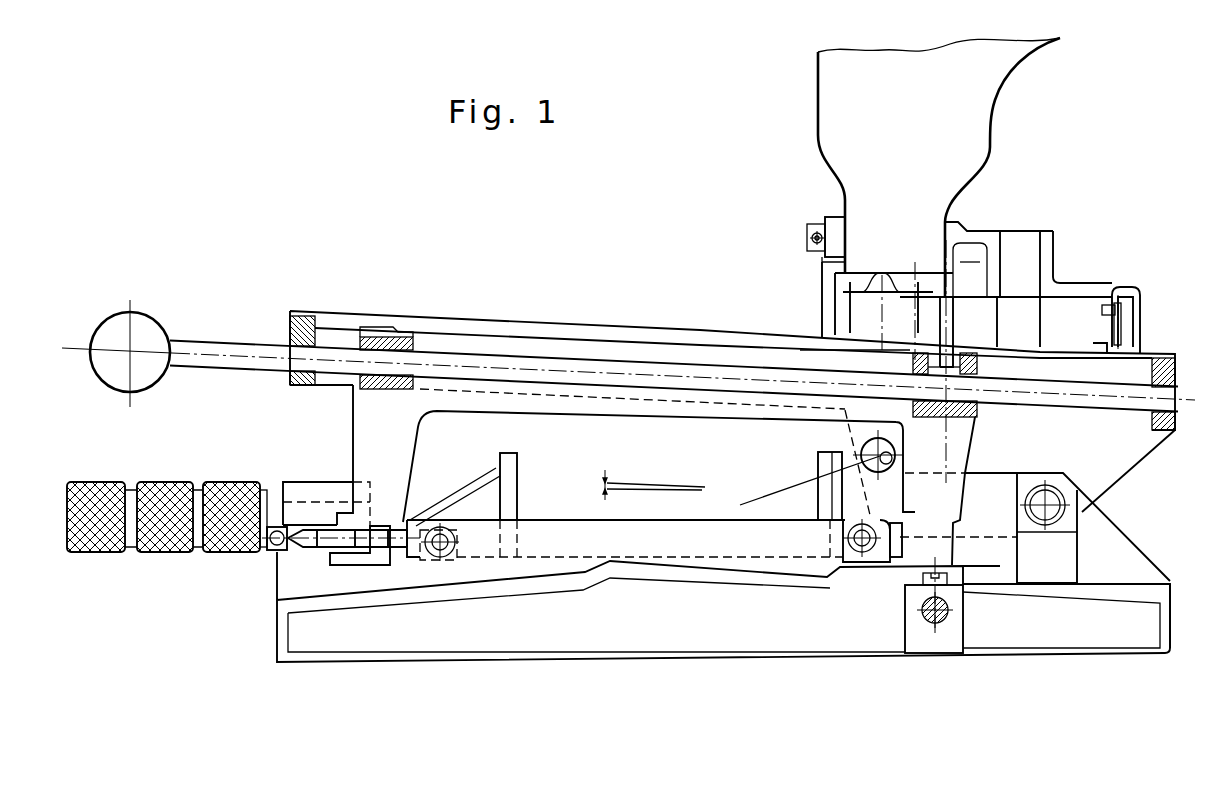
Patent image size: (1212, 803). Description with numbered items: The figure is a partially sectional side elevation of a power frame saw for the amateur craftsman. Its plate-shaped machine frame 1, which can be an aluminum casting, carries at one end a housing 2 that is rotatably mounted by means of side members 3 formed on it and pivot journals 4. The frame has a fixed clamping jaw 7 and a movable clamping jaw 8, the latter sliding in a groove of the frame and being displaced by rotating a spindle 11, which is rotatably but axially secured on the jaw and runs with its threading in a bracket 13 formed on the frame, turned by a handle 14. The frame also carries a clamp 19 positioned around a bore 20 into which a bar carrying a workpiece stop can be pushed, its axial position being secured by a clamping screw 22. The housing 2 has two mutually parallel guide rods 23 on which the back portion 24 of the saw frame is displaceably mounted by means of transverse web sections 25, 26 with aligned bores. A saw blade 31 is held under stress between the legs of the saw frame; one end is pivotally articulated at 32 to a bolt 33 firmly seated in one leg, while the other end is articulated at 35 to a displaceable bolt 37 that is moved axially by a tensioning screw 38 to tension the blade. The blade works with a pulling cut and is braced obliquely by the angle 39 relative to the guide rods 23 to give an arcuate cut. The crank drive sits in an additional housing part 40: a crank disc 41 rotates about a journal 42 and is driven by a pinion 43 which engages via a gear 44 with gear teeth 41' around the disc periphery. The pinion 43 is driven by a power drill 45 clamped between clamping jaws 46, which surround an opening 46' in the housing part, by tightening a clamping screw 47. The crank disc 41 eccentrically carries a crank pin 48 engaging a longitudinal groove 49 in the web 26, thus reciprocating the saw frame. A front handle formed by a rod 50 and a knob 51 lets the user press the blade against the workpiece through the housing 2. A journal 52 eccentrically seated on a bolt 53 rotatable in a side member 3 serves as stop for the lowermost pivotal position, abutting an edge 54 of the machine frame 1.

The machine frame 1 is at (778, 633).
The housing 2 is at (688, 323).
The side members 3 is at (1103, 473).
The pivot journals 4 is at (1172, 565).
The fixed clamping jaw 7 is at (822, 468).
The movable clamping jaw 8 is at (510, 468).
The spindle 11 is at (470, 472).
The bracket 13 is at (308, 493).
The handle 14 is at (110, 550).
The clamp 19 is at (948, 640).
The bore 20 is at (922, 623).
The clamping screw 22 is at (965, 563).
The guide rods 23 is at (503, 377).
The back portion of saw frame 24 is at (612, 350).
The web section 25 is at (370, 390).
The web section 26 is at (990, 392).
The saw blade 31 is at (678, 545).
The pivotal articulation 32 is at (867, 553).
The bolt 33 is at (905, 550).
The pivotal articulation 35 is at (458, 545).
The bolt 37 is at (380, 560).
The tensioning screw 38 is at (273, 552).
The angle 39 is at (612, 483).
The housing part 40 is at (1133, 313).
The crank disc 41 is at (1054, 277).
The gear teeth 41' is at (1146, 267).
The journal 42 is at (1017, 258).
The pinion 43 is at (840, 220).
The gear 44 is at (843, 312).
The power drill 45 is at (910, 156).
The clamping jaws 46 is at (930, 182).
The opening 46' is at (978, 335).
The clamping screw 47 is at (813, 240).
The crank pin 48 is at (943, 290).
The groove 49 is at (977, 353).
The rod 50 is at (237, 353).
The knob 51 is at (141, 333).
The journal 52 is at (767, 503).
The bolt 53 is at (867, 455).
The edge 54 is at (983, 471).